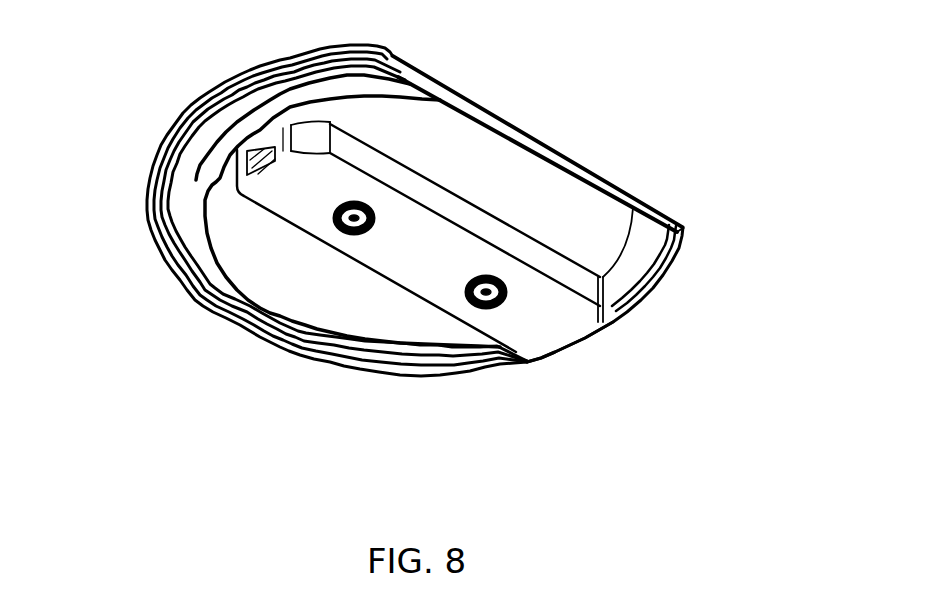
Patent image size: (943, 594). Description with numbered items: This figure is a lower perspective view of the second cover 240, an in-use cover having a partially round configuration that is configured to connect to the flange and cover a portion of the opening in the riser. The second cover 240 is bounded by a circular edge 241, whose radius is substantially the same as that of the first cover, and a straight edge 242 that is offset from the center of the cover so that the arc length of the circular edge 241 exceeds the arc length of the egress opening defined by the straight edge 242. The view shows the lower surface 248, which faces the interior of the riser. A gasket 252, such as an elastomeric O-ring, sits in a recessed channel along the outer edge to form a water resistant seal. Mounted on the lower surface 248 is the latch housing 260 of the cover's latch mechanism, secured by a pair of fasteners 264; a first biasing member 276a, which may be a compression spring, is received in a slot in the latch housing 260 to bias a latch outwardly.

The second cover 240 is at (720, 150).
The circular edge 241 is at (155, 245).
The straight edge 242 is at (546, 135).
The lower surface 248 is at (337, 295).
The gasket 252 is at (570, 350).
The latch housing 260 is at (482, 228).
The fasteners 264 is at (466, 286).
The first biasing member 276a is at (252, 146).